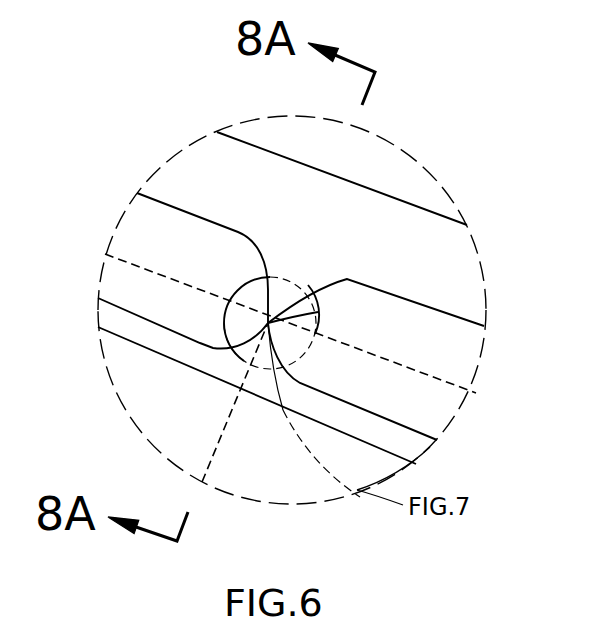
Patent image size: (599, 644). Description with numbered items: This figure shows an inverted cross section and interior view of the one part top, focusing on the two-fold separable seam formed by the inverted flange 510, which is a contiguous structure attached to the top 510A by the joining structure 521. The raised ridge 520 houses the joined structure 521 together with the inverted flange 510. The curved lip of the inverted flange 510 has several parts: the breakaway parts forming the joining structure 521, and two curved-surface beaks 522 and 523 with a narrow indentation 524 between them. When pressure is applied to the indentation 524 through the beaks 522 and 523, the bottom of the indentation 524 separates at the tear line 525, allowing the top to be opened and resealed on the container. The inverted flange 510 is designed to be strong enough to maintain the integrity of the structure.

The inverted flange 510 is at (257, 492).
The top 510A is at (417, 185).
The raised ridge 520 is at (253, 163).
The joining structure 521 is at (192, 228).
The curved surface beak 522 is at (268, 278).
The curved surface beak 523 is at (231, 320).
The narrow indentation 524 is at (317, 320).
The tear line 525 is at (425, 378).